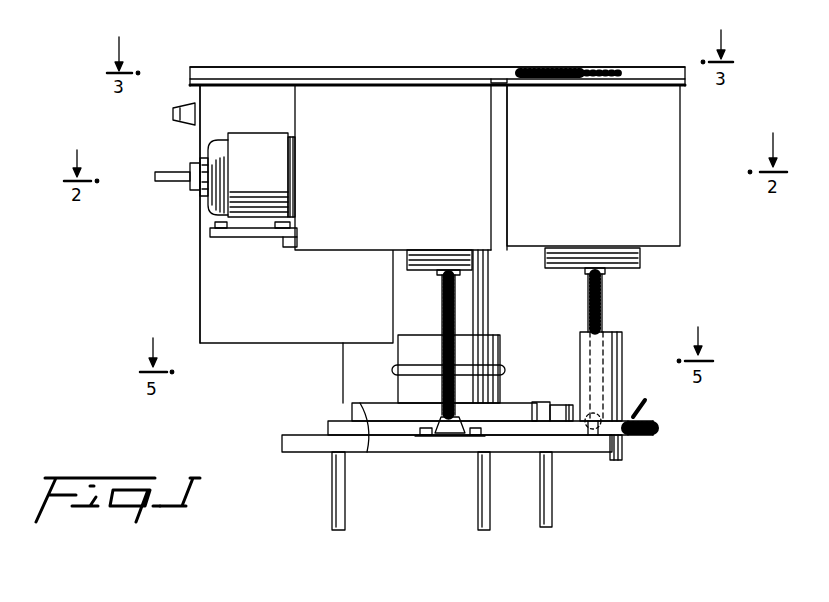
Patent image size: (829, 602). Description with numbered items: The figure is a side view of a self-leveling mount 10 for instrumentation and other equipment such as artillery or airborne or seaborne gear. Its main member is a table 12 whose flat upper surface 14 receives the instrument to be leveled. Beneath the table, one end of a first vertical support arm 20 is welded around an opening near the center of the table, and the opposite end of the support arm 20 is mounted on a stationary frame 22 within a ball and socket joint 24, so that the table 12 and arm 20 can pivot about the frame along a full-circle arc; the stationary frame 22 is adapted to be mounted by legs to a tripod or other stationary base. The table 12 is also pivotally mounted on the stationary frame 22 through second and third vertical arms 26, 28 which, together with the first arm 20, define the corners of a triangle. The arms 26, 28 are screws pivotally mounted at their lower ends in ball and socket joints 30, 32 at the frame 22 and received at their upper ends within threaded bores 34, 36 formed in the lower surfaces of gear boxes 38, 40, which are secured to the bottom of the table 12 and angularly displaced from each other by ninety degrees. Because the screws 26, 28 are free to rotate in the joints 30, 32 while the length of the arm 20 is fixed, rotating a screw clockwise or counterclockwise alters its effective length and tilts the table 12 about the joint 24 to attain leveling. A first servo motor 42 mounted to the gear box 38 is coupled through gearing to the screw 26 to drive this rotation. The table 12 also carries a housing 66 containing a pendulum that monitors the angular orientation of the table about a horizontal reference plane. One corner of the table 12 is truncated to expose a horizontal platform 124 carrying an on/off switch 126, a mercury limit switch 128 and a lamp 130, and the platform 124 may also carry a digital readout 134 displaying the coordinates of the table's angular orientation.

The self-leveling mount 10 is at (567, 53).
The table 12 is at (218, 76).
The flat upper surface 14 is at (357, 68).
The first vertical support arm 20 is at (490, 297).
The stationary frame 22 is at (288, 447).
The ball and socket joint 24 is at (352, 412).
The second vertical arm 26 is at (445, 359).
The third vertical arm 28 is at (606, 316).
The ball and socket joint 30 is at (440, 432).
The ball and socket joint 32 is at (593, 445).
The threaded bore 34 is at (440, 275).
The threaded bore 36 is at (610, 272).
The gear box 38 is at (338, 242).
The gear box 40 is at (665, 217).
The first servo motor 42 is at (248, 183).
The housing 66 is at (208, 270).
The horizontal platform 124 is at (642, 437).
The on/off switch 126 is at (645, 402).
The mercury limit switch 128 is at (580, 367).
The lamp 130 is at (617, 457).
The digital readout 134 is at (542, 412).